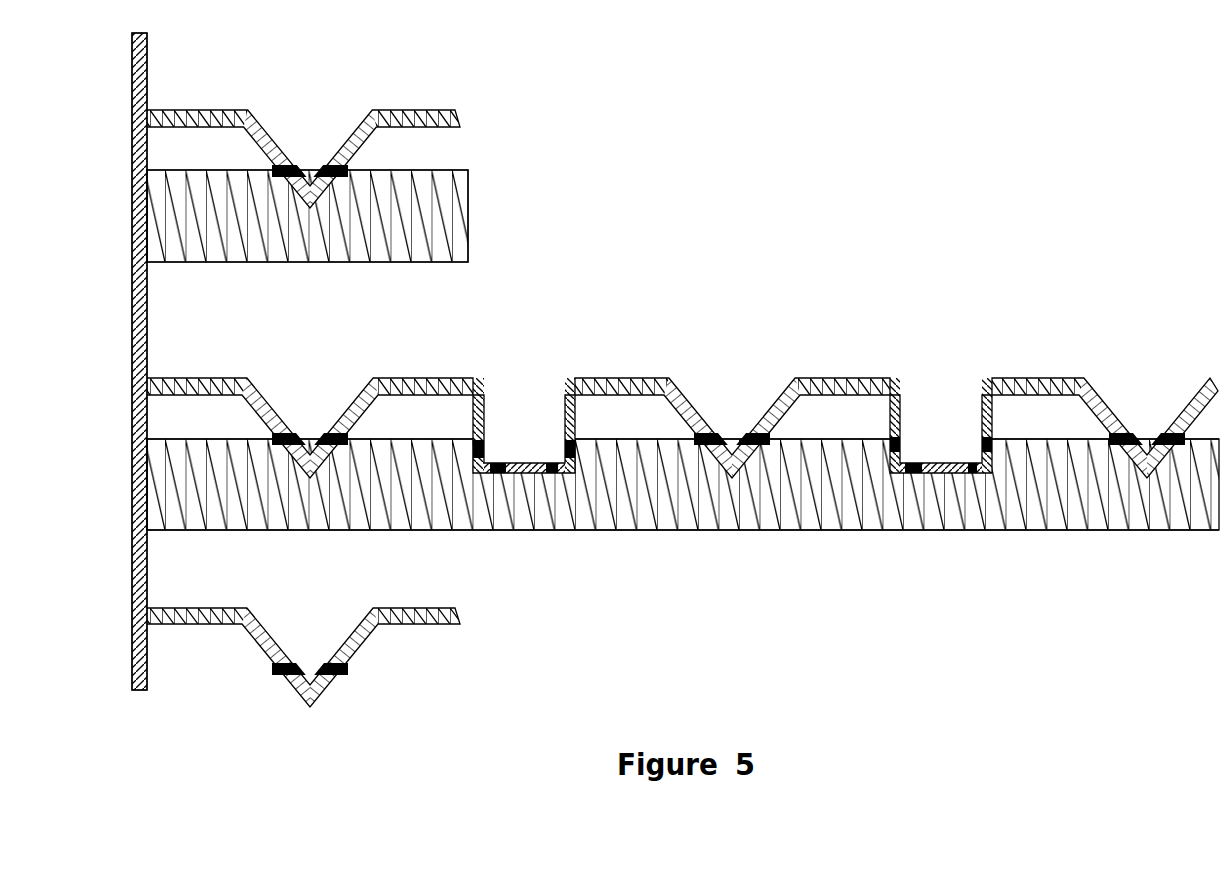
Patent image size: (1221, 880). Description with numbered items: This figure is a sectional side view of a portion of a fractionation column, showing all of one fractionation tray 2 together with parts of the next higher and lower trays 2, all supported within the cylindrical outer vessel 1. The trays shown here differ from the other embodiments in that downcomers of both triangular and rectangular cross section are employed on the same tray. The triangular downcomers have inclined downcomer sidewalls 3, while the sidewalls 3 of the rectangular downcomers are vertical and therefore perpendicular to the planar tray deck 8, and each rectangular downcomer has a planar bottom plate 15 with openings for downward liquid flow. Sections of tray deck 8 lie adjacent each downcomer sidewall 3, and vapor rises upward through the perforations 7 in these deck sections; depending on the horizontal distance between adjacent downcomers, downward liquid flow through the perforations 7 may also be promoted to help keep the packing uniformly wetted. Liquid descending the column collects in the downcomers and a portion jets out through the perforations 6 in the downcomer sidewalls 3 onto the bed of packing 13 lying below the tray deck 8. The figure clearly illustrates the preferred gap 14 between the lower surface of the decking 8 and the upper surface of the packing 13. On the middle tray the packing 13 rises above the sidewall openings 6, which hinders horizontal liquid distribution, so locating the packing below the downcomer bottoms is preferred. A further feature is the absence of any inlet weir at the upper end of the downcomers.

The outer vessel 1 is at (140, 193).
The fractionation tray 2 is at (233, 110).
The downcomer sidewall 3 is at (353, 410).
The sidewall perforations 6 is at (347, 167).
The deck perforations 7 is at (168, 111).
The tray deck 8 is at (570, 375).
The bed of packing 13 is at (298, 251).
The gap 14 is at (945, 403).
The bottom plate 15 is at (968, 463).